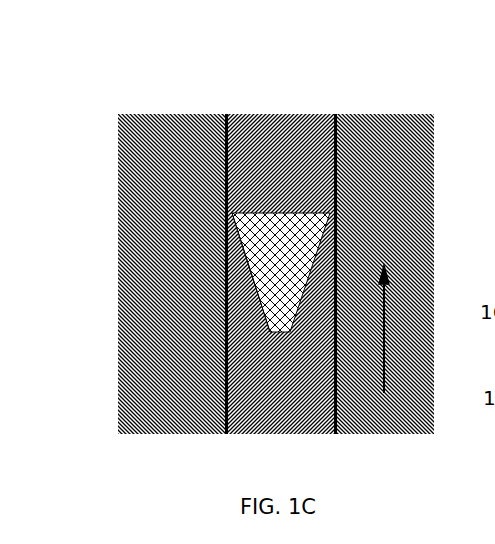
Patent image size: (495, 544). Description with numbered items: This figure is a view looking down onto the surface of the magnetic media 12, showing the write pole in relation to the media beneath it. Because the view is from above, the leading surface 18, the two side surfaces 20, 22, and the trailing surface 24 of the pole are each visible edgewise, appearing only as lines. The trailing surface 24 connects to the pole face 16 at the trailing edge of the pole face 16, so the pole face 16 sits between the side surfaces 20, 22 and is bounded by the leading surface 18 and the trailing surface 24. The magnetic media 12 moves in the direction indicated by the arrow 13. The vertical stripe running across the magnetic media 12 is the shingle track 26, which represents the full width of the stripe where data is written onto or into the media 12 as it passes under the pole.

The magnetic media 12 is at (170, 355).
The arrow 13 is at (388, 318).
The pole face 16 is at (237, 278).
The leading surface 18 is at (352, 431).
The side surface 20 is at (336, 255).
The side surface 22 is at (226, 256).
The trailing surface 24 is at (220, 120).
The shingle track 26 is at (318, 168).